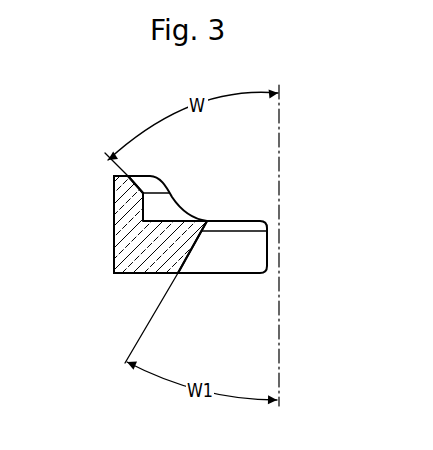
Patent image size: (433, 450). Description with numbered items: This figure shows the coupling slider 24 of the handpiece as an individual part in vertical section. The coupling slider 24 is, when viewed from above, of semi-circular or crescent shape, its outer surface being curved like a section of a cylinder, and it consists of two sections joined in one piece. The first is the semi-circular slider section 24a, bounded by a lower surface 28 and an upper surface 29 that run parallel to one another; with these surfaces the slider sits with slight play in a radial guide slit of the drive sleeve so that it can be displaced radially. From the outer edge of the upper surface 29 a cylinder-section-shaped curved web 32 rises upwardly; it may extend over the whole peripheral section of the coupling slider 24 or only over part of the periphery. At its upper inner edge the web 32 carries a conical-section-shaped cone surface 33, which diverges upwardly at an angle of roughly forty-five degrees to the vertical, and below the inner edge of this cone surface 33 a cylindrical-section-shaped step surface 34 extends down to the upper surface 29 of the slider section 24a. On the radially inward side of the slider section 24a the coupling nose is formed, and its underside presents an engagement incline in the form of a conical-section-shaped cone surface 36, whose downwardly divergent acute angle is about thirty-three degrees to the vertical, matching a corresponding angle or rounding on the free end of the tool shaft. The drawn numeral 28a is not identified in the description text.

The coupling slider 24 is at (211, 289).
The slider section 24a is at (147, 274).
The lower surface 28 is at (190, 275).
The side surface of body 28a is at (112, 253).
The upper surface 29 is at (242, 221).
The curved web 32 is at (114, 199).
The cone surface 33 is at (154, 178).
The step surface 34 is at (146, 208).
The cone surface 36 is at (200, 250).